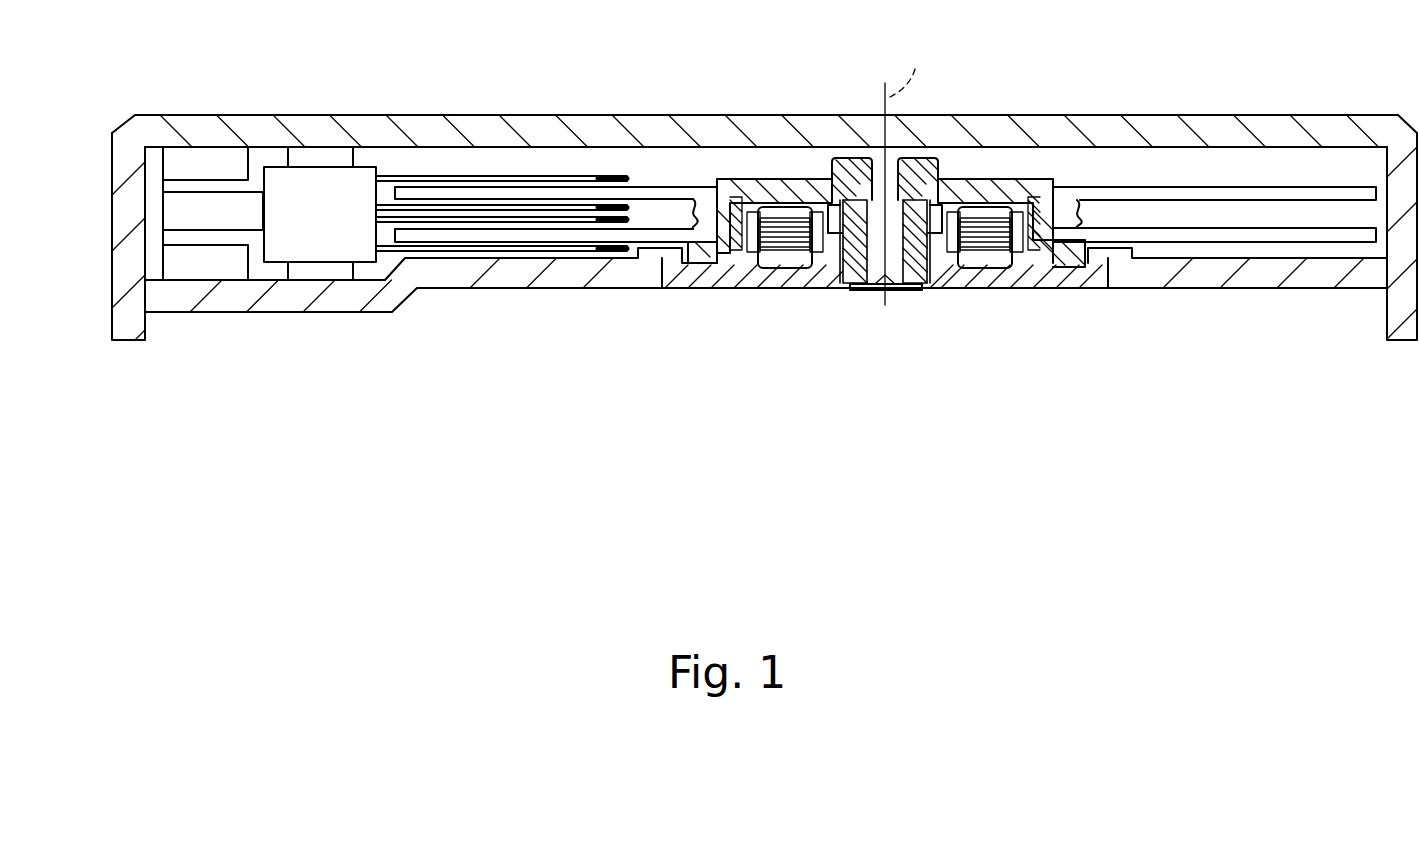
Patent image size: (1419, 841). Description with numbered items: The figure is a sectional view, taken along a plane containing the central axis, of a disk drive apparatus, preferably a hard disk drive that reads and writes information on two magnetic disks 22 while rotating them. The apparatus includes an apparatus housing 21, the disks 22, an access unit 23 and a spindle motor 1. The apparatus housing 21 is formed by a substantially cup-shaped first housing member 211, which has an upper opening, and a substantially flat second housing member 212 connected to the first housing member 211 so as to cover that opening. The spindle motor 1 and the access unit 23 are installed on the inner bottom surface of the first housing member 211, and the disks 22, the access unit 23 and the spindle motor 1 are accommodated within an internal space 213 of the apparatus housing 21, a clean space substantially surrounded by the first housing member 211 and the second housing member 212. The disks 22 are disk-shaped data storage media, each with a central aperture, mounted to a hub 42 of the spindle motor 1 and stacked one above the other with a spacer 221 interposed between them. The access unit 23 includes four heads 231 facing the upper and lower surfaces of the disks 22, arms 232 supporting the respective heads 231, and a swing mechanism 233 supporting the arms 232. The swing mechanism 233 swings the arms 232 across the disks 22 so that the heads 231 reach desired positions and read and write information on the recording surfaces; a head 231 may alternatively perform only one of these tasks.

The spindle motor 1 is at (991, 159).
The apparatus housing 21 is at (1367, 68).
The first housing member 211 is at (1395, 193).
The second housing member 212 is at (1262, 132).
The internal space 213 is at (1167, 176).
The magnetic disk 22 is at (1255, 190).
The spacer 221 is at (693, 220).
The access unit 23 is at (603, 393).
The head 231 is at (607, 223).
The arm 232 is at (480, 222).
The swing mechanism 233 is at (327, 242).
The hub 42 is at (785, 178).